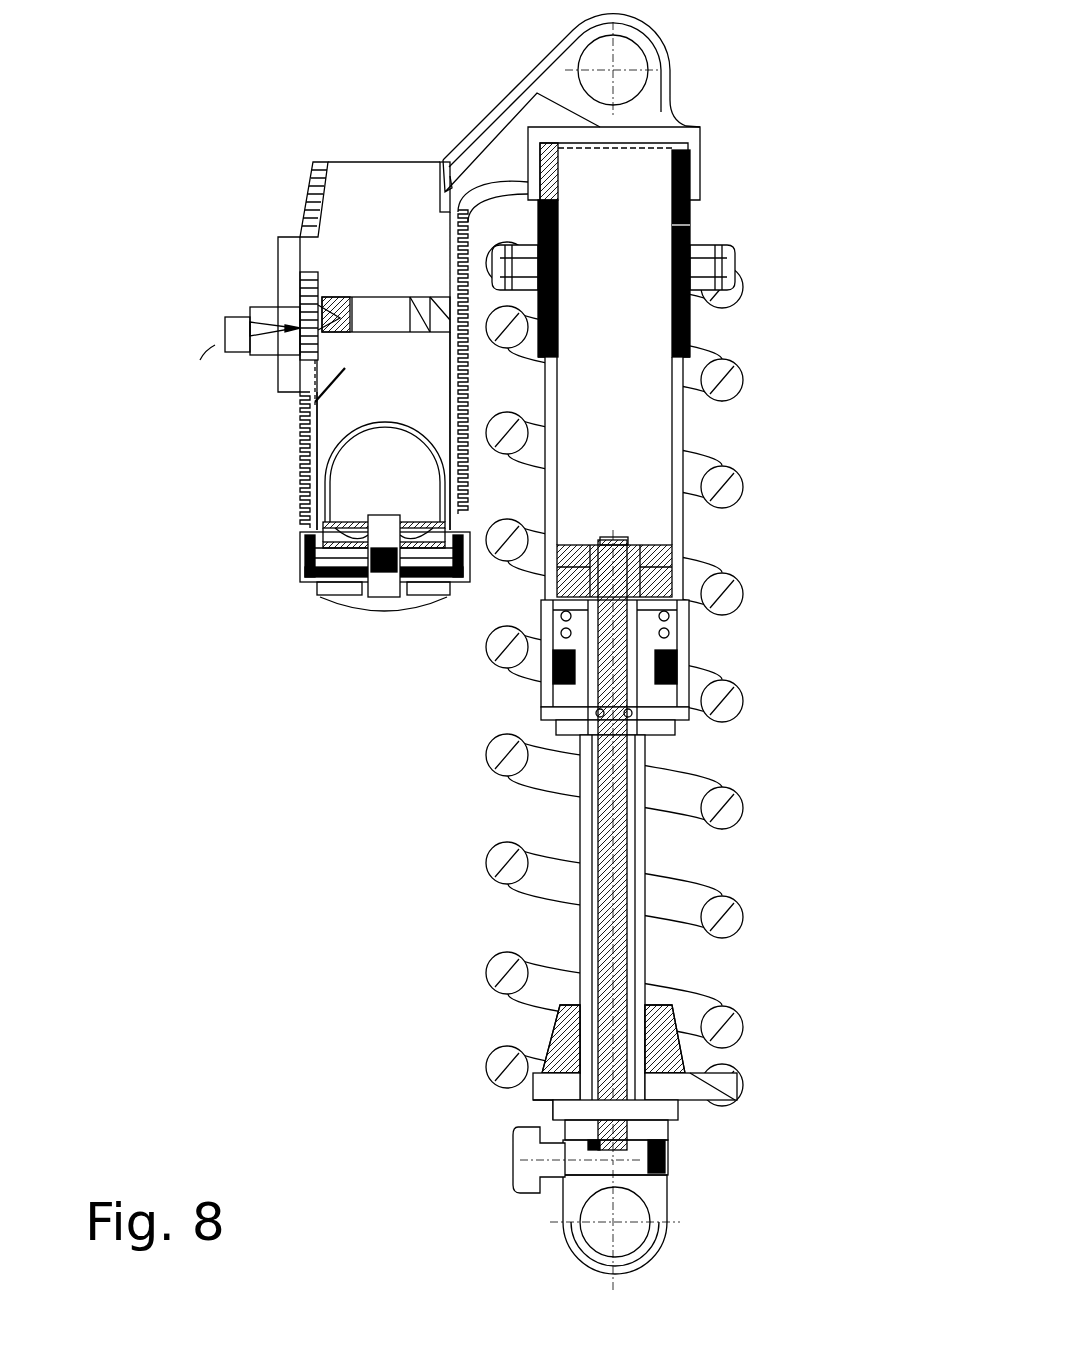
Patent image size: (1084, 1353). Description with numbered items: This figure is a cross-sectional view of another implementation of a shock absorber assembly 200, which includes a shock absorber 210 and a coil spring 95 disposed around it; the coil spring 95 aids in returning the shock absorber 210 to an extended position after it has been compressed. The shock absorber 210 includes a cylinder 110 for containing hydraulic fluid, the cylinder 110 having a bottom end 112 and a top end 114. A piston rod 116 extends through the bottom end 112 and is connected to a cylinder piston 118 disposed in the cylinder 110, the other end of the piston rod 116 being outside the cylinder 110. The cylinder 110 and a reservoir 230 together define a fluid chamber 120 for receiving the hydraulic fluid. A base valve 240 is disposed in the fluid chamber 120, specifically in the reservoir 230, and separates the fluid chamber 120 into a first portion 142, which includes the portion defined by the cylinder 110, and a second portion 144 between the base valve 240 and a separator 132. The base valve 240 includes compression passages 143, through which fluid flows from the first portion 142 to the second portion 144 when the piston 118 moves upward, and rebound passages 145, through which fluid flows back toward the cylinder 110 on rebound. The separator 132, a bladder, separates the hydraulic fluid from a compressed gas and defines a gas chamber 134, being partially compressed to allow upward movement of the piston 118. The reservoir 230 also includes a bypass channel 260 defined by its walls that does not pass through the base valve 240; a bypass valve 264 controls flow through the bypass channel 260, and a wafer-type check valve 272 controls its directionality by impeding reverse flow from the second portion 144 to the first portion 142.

The shock absorber assembly 200 is at (897, 170).
The cylinder 110 is at (675, 432).
The top end 114 is at (700, 165).
The fluid chamber 120 is at (645, 383).
The cylinder piston 118 is at (660, 545).
The bottom end 112 is at (700, 690).
The piston rod 116 is at (642, 852).
The coil spring 95 is at (497, 965).
The shock absorber 210 is at (275, 745).
The reservoir 230 is at (265, 215).
The bypass channel 260 is at (285, 260).
The first portion 142 is at (377, 223).
The base valve 240 is at (383, 307).
The rebound passages 145 is at (432, 322).
The compression passages 143 is at (333, 307).
The bypass valve 264 is at (233, 310).
The check valve 272 is at (305, 383).
The second portion 144 is at (345, 405).
The separator 132 is at (340, 455).
The gas chamber 134 is at (365, 485).